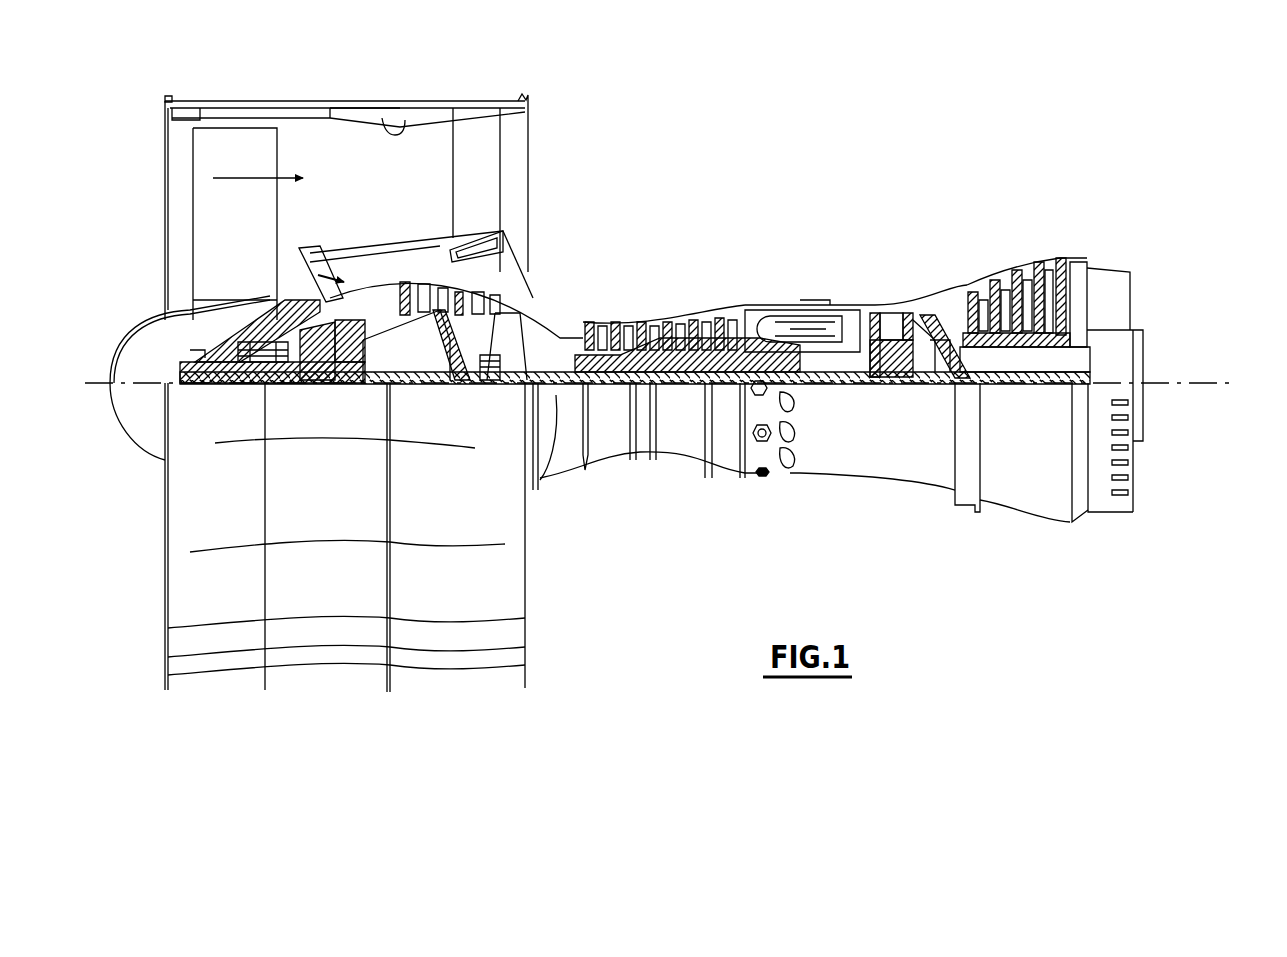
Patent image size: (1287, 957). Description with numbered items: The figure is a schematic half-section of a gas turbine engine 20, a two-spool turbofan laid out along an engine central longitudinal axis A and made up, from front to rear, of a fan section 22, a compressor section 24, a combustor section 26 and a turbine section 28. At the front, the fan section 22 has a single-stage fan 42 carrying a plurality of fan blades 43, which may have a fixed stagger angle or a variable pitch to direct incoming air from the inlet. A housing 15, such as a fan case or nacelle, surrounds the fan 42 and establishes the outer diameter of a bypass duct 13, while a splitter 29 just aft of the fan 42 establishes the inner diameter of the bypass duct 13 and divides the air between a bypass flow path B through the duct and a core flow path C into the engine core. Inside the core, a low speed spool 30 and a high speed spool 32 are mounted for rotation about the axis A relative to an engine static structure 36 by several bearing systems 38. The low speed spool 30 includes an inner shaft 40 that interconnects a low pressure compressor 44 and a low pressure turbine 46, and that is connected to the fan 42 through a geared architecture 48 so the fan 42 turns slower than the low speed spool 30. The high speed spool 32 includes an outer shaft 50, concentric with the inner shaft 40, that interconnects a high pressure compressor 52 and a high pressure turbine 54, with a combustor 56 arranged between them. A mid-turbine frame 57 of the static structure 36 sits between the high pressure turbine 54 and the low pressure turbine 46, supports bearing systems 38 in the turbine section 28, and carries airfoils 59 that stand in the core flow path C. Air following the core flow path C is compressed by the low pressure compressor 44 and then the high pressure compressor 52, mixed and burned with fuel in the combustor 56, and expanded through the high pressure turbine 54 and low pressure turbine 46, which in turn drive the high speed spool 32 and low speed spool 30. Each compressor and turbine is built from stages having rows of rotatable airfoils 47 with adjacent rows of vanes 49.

The gas turbine engine 20 is at (803, 160).
The fan section 22 is at (276, 96).
The housing 15 is at (349, 106).
The bypass duct 13 is at (402, 113).
The fan 42 is at (248, 232).
The fan blades 43 is at (265, 233).
The splitter 29 is at (320, 250).
The rotatable airfoils 47 is at (410, 285).
The vanes 49 is at (428, 285).
The low pressure compressor 44 is at (478, 280).
The compressor section 24 is at (580, 294).
The high pressure compressor 52 is at (667, 318).
The high speed spool 32 is at (726, 335).
The combustor section 26 is at (801, 282).
The combustor 56 is at (800, 314).
The high pressure turbine 54 is at (874, 312).
The mid-turbine frame 57 is at (937, 297).
The turbine section 28 is at (977, 245).
The low pressure turbine 46 is at (1017, 284).
The airfoils 59 is at (975, 358).
The geared architecture 48 is at (354, 372).
The bearing systems 38 is at (487, 372).
The inner shaft 40 is at (553, 395).
The low speed spool 30 is at (684, 398).
The engine static structure 36 is at (726, 482).
The outer shaft 50 is at (800, 372).
The engine central longitudinal axis A is at (1225, 383).
The bypass flow path B is at (245, 178).
The core flow path C is at (300, 269).